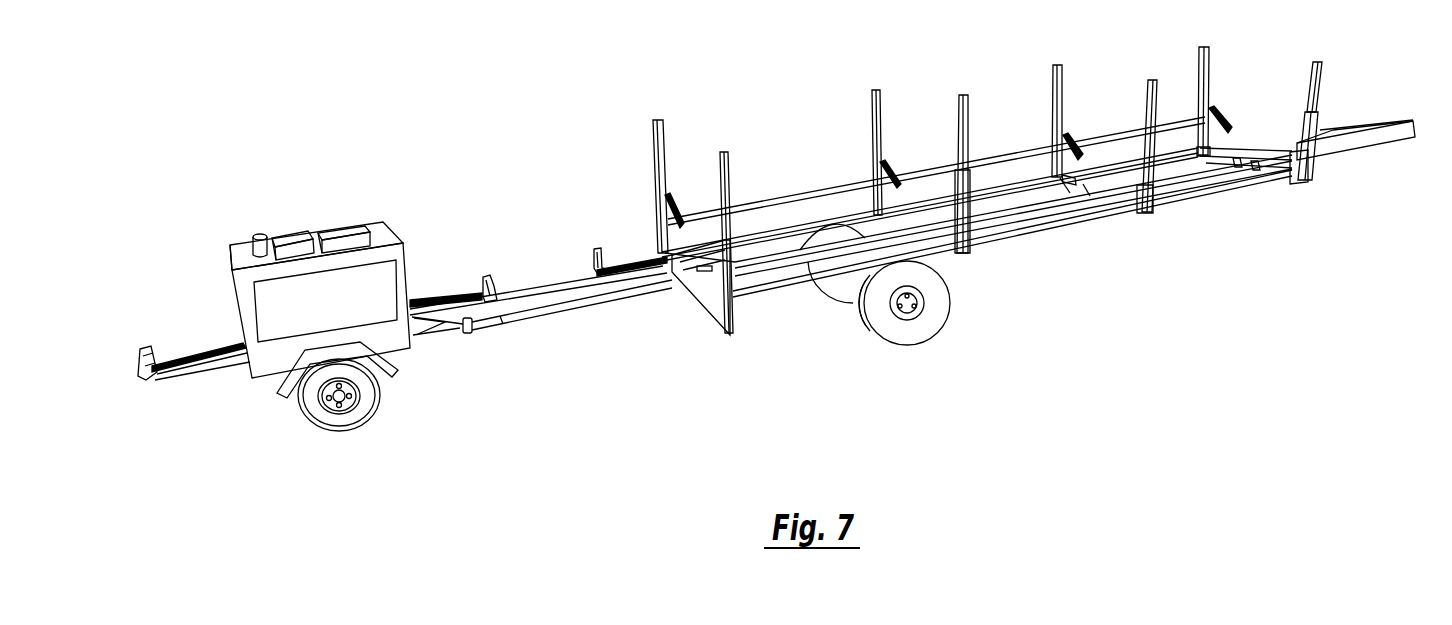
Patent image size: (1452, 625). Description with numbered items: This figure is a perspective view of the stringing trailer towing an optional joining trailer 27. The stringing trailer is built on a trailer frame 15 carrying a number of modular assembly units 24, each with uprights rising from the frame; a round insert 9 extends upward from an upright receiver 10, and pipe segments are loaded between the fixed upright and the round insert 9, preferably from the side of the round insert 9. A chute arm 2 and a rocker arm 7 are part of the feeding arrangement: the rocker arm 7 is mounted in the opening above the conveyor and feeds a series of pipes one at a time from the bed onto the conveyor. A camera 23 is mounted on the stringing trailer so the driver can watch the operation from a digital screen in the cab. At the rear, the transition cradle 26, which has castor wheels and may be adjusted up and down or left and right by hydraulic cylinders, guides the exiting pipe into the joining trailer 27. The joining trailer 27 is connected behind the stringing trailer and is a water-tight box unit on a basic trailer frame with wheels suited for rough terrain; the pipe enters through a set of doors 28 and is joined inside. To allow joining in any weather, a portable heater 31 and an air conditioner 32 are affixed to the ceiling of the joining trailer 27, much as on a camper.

The chute arm 2 is at (885, 163).
The rocker arm 7 is at (1068, 177).
The round insert 9 is at (728, 180).
The upright receiver 10 is at (1320, 113).
The trailer frame 15 is at (993, 237).
The camera 23 is at (651, 120).
The assembly units 24 is at (966, 120).
The transition cradle 26 is at (484, 278).
The joining trailer 27 is at (242, 253).
The doors 28 is at (405, 273).
The heater 31 is at (291, 238).
The air conditioner 32 is at (347, 235).